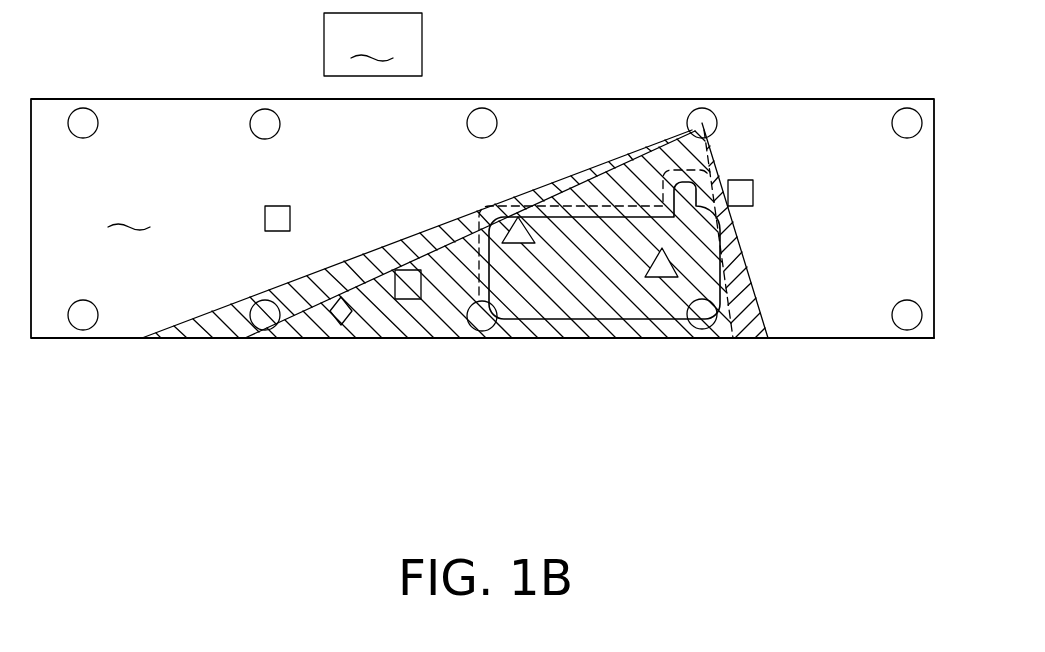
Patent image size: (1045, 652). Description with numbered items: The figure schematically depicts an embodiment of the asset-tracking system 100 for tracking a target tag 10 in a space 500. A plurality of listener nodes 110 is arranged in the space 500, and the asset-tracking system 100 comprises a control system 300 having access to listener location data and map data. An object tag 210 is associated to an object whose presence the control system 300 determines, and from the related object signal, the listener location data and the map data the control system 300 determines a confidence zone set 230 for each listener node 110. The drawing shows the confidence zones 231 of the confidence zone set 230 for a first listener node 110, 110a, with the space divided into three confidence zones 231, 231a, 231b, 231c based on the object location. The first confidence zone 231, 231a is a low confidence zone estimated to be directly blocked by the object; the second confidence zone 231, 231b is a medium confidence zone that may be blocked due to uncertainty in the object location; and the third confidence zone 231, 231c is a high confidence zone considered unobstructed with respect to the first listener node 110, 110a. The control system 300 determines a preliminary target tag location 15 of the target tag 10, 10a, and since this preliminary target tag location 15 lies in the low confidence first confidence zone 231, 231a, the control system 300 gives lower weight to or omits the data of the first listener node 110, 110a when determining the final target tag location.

The asset-tracking system 100 is at (99, 339).
The listener nodes 110 is at (85, 99).
The first listener node 110a is at (705, 99).
The target tag 10 is at (288, 204).
The target tag 10a is at (416, 302).
The preliminary target tag location 15 is at (345, 327).
The object tag 210 is at (530, 216).
The confidence zone set 230 is at (787, 339).
The confidence zones 231 is at (538, 274).
The first confidence zone 231a is at (597, 339).
The second confidence zone 231b is at (214, 339).
The third confidence zone 231c is at (884, 339).
The control system 300 is at (373, 44).
The space 500 is at (129, 213).